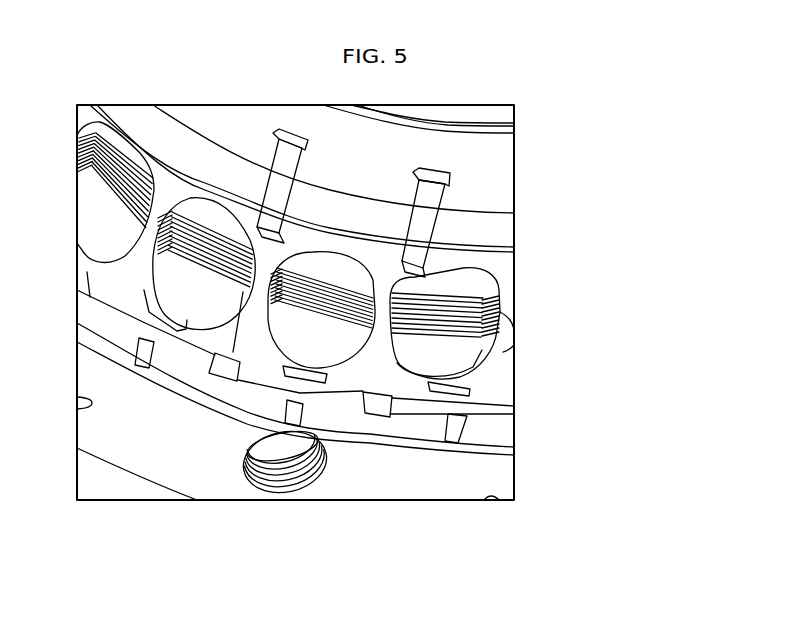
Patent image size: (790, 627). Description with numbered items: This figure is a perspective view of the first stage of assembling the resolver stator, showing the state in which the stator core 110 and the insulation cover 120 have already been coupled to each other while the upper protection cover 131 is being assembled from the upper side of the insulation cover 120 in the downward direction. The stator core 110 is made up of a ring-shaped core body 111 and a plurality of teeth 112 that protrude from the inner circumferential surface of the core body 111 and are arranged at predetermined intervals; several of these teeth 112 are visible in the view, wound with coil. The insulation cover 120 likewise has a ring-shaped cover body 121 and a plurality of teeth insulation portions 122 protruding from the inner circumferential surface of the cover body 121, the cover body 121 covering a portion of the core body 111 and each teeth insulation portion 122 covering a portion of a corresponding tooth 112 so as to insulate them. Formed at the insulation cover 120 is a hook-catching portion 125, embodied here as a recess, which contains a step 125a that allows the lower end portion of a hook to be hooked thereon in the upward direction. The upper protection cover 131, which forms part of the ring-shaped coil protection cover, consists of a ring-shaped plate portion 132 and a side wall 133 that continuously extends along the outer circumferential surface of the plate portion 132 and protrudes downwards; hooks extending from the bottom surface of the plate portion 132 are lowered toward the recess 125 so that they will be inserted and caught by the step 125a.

The stator core 110 is at (295, 311).
The core body 111 is at (472, 466).
The teeth 112 is at (500, 305).
The insulation cover 120 is at (605, 408).
The cover body 121 is at (503, 428).
The teeth insulation portions 122 is at (455, 350).
The hook-catching portion 125 is at (378, 403).
The step 125a is at (383, 413).
The upper protection cover 131 is at (618, 178).
The plate portion 132 is at (490, 175).
The side wall 133 is at (490, 230).